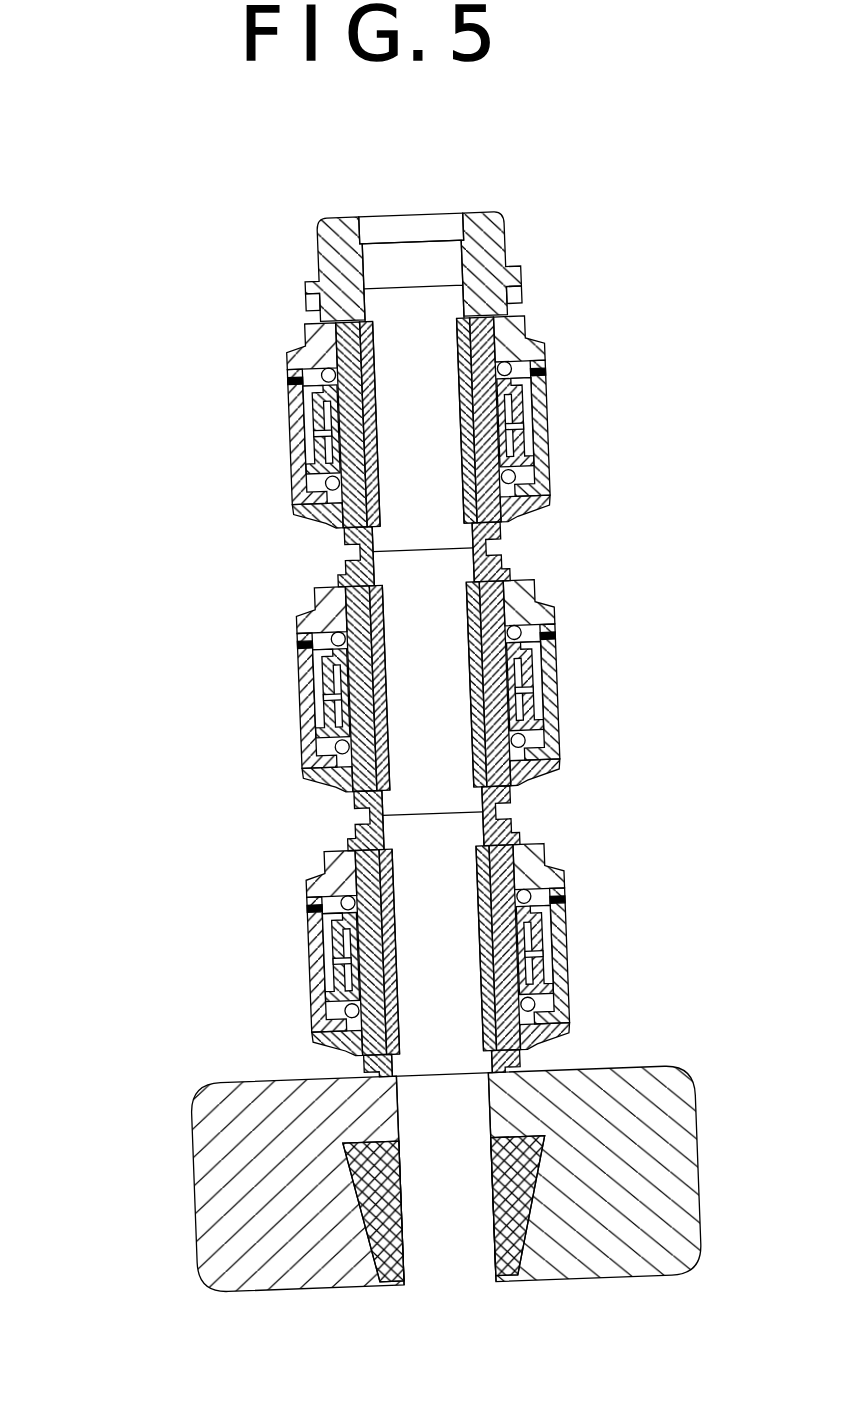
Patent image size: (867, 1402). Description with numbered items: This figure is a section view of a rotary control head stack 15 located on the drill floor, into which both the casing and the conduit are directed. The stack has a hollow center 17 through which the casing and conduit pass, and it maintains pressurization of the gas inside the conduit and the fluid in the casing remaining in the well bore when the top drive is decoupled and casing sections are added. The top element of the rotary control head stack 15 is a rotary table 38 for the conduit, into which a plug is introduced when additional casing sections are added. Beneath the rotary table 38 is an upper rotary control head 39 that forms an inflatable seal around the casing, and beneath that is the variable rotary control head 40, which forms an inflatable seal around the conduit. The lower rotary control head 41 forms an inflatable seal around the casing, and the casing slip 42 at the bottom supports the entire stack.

The rotary control head stack 15 is at (622, 457).
The hollow center 17 is at (403, 310).
The rotary table 38 is at (302, 246).
The upper rotary control head 39 is at (287, 418).
The variable rotary control head 40 is at (292, 663).
The lower rotary control head 41 is at (302, 927).
The casing slip 42 is at (186, 1172).